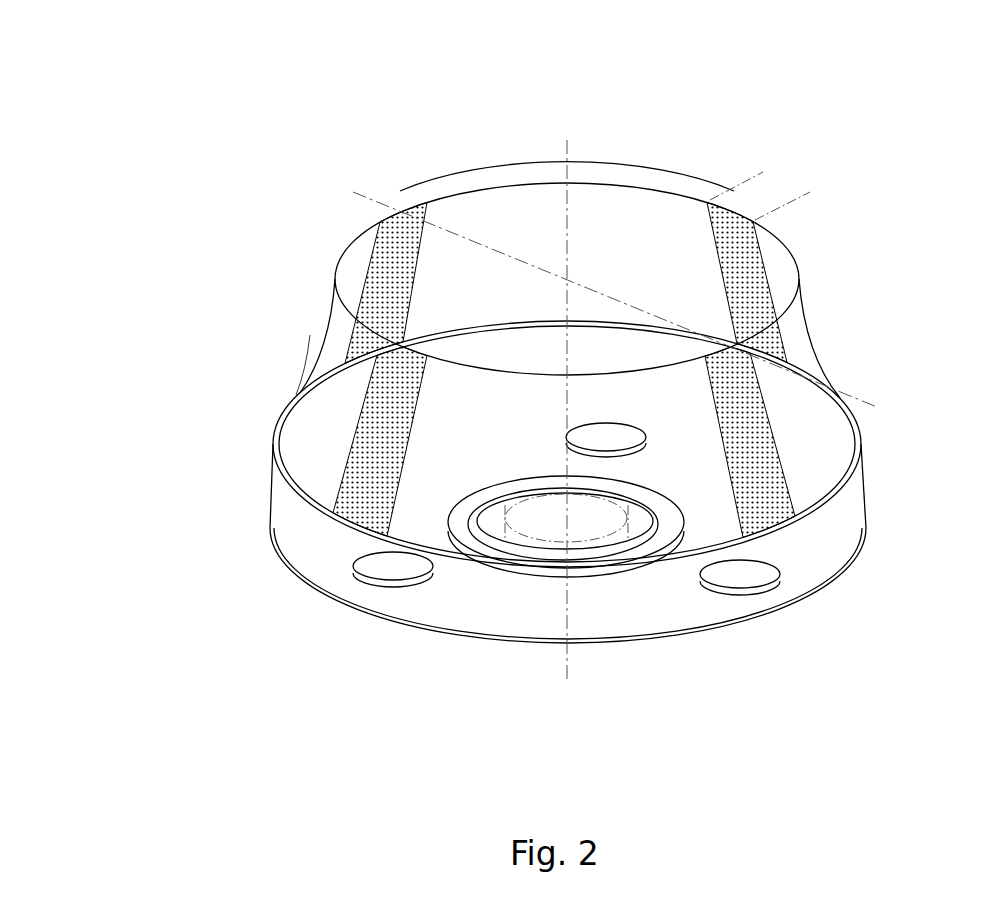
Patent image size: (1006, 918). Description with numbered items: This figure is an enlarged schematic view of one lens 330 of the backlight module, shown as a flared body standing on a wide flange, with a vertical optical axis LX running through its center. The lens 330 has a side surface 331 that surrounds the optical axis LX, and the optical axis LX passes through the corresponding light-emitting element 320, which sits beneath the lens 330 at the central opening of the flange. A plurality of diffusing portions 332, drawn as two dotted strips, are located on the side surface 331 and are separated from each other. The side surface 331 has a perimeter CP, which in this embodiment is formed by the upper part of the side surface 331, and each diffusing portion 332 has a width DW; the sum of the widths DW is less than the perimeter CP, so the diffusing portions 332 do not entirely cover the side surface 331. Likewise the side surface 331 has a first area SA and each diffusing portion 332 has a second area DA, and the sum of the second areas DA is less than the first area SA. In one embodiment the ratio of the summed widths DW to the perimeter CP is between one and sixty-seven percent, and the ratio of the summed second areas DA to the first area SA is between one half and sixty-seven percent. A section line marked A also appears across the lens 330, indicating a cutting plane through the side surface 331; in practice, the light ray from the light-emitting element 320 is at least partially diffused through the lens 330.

The lens 330 is at (132, 79).
The side surface 331 is at (810, 440).
The diffusing portions 332 is at (268, 536).
The light-emitting element 320 is at (540, 517).
The optical axis LX is at (567, 150).
The perimeter CP is at (658, 178).
The width DW is at (803, 188).
The first area SA is at (314, 418).
The second area DA is at (340, 487).
The section line A- A is at (353, 192).